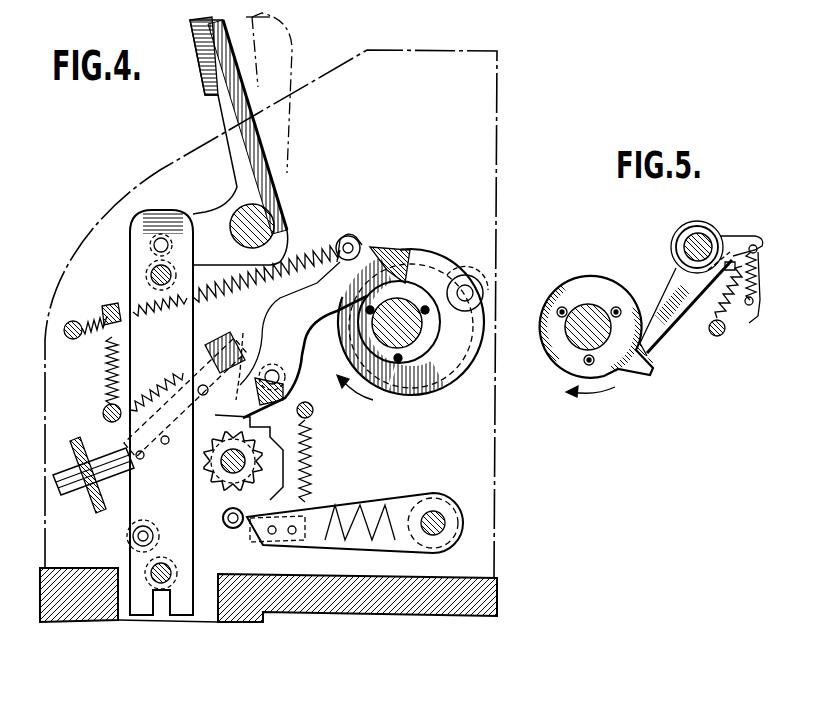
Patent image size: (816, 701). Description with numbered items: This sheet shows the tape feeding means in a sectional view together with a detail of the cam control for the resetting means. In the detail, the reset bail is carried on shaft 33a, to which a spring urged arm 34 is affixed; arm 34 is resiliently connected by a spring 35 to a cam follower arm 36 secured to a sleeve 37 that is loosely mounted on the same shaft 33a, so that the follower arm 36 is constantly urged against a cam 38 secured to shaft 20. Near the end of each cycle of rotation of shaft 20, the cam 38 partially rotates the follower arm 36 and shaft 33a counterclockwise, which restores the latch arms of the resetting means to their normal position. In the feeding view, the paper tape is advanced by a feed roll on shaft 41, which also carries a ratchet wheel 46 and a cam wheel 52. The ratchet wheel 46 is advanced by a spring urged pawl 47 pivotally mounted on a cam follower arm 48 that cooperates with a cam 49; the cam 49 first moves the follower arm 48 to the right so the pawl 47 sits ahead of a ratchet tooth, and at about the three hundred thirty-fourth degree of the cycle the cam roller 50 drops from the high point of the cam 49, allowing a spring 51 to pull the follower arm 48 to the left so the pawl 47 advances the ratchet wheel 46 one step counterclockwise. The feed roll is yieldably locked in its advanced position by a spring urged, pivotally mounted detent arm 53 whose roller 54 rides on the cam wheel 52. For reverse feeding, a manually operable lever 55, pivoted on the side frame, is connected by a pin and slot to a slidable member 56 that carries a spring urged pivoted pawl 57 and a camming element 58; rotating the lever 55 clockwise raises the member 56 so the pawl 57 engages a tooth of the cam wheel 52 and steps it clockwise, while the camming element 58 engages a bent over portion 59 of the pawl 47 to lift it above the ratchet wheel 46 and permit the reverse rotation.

In FIG. 4, the shaft 20 is at (392, 340).
In FIG. 5, the shaft 20 is at (590, 318).
In FIG. 5, the shaft 33a is at (706, 237).
In FIG. 5, the spring urged arm 34 is at (712, 290).
In FIG. 5, the spring 35 is at (752, 323).
In FIG. 5, the cam follower arm 36 is at (672, 302).
In FIG. 5, the sleeve 37 is at (689, 230).
In FIG. 5, the cam 38 is at (578, 283).
In FIG. 4, the shaft 41 is at (230, 468).
In FIG. 4, the ratchet wheel 46 is at (277, 445).
In FIG. 4, the pawl 47 is at (260, 363).
In FIG. 4, the cam follower arm 48 is at (270, 317).
In FIG. 4, the cam 49 is at (345, 335).
In FIG. 4, the cam roller 50 is at (476, 278).
In FIG. 4, the spring 51 is at (290, 252).
In FIG. 4, the cam wheel 52 is at (303, 500).
In FIG. 4, the detent arm 53 is at (343, 513).
In FIG. 4, the roller 54 is at (216, 537).
In FIG. 4, the manually operable lever 55 is at (248, 153).
In FIG. 4, the member 56 is at (130, 277).
In FIG. 4, the pawl 57 is at (150, 510).
In FIG. 4, the camming element 58 is at (220, 340).
In FIG. 4, the bent over portion 59 is at (190, 312).